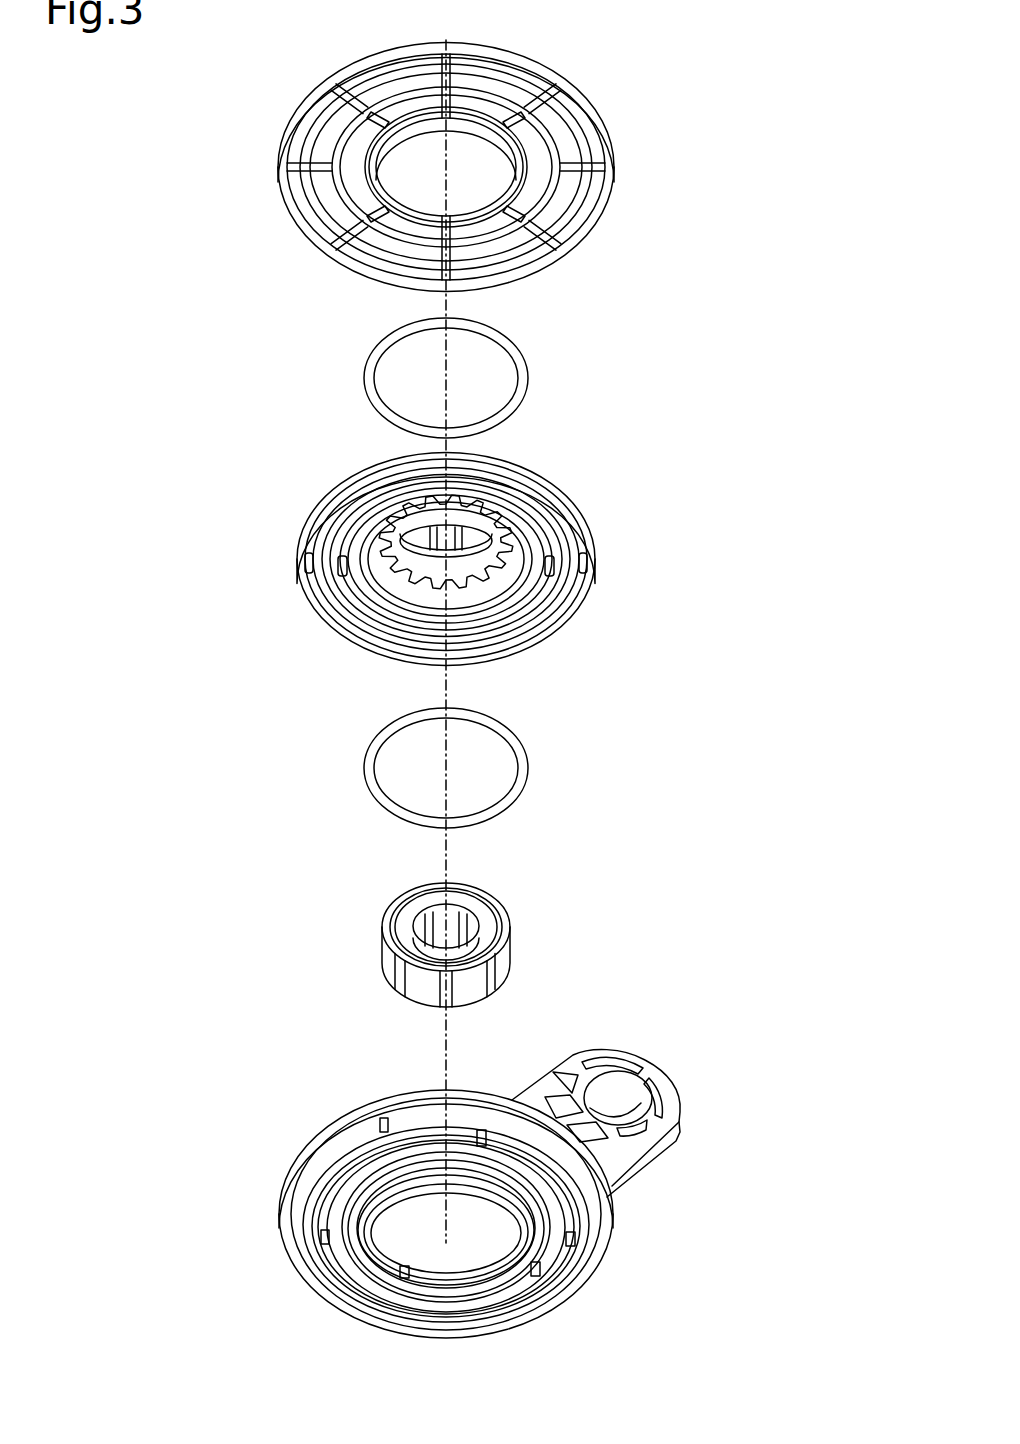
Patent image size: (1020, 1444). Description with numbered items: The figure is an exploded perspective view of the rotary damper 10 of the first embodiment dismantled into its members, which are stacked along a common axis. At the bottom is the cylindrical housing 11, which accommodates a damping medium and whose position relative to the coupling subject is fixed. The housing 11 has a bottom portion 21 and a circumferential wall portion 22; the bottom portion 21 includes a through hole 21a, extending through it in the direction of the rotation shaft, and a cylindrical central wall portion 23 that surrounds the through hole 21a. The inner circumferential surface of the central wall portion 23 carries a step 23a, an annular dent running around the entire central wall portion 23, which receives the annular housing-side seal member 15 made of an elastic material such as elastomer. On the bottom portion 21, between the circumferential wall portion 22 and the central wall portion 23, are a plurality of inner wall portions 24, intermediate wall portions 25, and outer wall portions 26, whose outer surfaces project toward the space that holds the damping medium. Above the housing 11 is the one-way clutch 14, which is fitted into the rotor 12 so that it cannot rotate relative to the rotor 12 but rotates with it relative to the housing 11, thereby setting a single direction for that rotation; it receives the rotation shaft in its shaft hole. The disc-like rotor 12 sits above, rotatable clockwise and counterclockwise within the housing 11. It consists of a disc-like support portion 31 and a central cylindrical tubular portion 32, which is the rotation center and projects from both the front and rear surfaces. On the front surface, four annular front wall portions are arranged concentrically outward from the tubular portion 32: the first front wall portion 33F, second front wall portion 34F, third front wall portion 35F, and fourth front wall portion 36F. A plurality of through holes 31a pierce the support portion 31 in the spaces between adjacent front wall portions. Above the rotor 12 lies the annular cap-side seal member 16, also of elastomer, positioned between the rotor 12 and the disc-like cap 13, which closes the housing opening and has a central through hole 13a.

The damper 10 is at (694, 91).
The housing 11 is at (453, 1209).
The rotor 12 is at (421, 585).
The cap 13 is at (470, 153).
The through hole 13a is at (477, 127).
The one-way clutch 14 is at (510, 945).
The housing-side seal member 15 is at (528, 768).
The cap-side seal member 16 is at (528, 378).
The bottom portion 21 is at (482, 1130).
The through hole 21a is at (403, 1274).
The circumferential wall portion 22 is at (317, 1162).
The central wall portion 23 is at (323, 1236).
The step 23a is at (385, 1121).
The inner wall portions 24 is at (537, 1272).
The intermediate wall portions 25 is at (574, 1240).
The outer wall portions 26 is at (310, 1202).
The support portion 31 is at (421, 559).
The through holes 31a is at (302, 588).
The tubular portion 32 is at (515, 562).
The first front wall portion 33F is at (370, 590).
The second front wall portion 34F is at (365, 625).
The third front wall portion 35F is at (568, 603).
The fourth front wall portion 36F is at (590, 580).